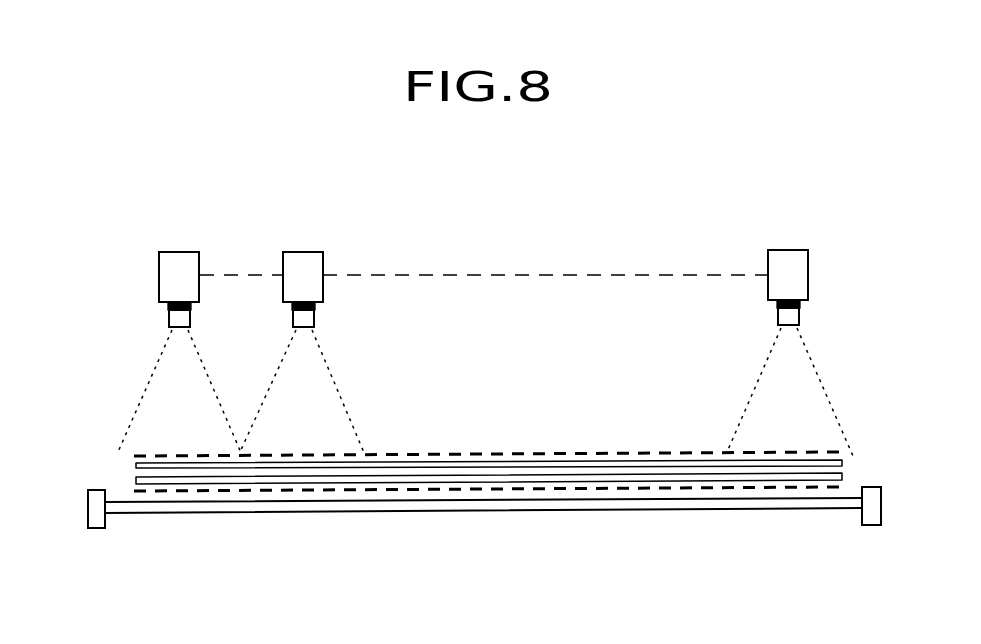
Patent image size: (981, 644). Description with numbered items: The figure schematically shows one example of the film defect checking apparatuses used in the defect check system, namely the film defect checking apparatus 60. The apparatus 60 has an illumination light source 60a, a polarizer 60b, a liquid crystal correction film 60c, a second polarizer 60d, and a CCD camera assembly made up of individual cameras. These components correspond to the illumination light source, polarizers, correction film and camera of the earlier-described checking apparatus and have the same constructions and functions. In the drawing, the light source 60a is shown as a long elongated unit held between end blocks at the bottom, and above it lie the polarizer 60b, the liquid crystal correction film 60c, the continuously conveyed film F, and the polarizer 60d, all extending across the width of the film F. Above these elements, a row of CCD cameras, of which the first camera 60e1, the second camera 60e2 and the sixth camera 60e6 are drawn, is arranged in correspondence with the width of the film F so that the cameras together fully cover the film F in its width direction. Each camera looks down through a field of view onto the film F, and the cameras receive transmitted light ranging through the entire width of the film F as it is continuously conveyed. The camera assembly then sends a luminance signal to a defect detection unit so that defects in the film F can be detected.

The film defect checking apparatus 60 is at (582, 208).
The CCD camera 60e1 is at (177, 252).
The CCD camera 60e2 is at (305, 252).
The CCD camera 60e6 is at (787, 250).
The illumination light source 60a is at (580, 509).
The polarizer 60b is at (700, 487).
The liquid crystal correction film 60c is at (803, 476).
The polarizer 60d is at (667, 452).
The film F is at (132, 465).